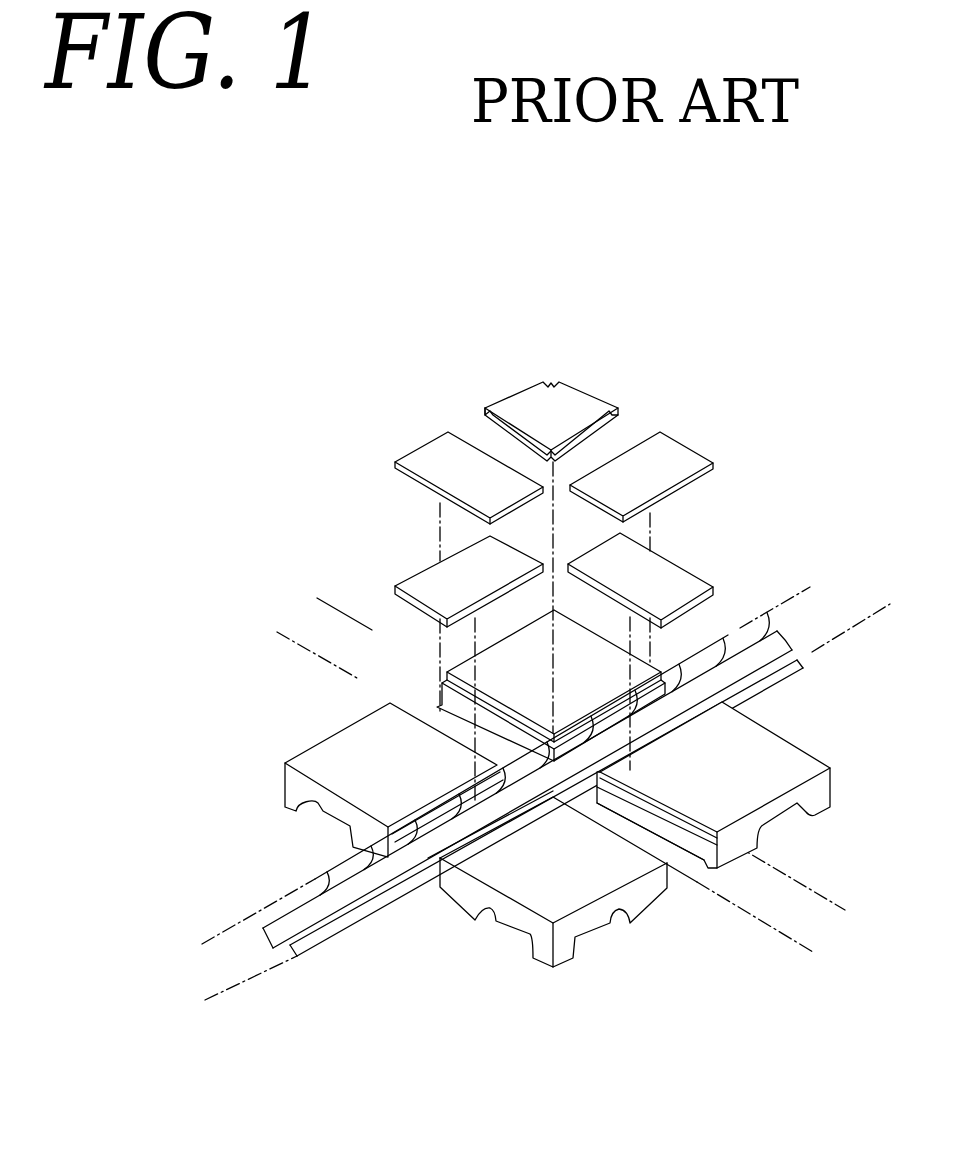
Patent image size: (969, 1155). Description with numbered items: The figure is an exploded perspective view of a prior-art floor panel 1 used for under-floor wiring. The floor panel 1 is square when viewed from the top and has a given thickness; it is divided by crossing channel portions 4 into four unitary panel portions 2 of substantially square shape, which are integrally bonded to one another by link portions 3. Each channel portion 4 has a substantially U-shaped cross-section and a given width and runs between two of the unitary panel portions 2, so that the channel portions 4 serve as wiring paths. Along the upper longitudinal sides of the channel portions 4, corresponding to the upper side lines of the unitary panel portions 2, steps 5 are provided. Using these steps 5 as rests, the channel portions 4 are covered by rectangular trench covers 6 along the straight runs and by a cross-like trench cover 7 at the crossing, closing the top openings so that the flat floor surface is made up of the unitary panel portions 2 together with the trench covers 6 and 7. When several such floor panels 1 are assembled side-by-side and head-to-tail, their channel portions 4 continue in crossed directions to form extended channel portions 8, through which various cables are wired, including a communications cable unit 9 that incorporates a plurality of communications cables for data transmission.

The floor panel 1 is at (787, 690).
The unitary panel portion 2 is at (348, 735).
The link portion 3 is at (455, 732).
The channel portion 4 is at (450, 847).
The step 5 is at (430, 808).
The rectangular trench cover 6 is at (447, 448).
The cross-like trench cover 7 is at (570, 391).
The extended channel portion 8 is at (332, 630).
The communications cable unit 9 is at (307, 907).